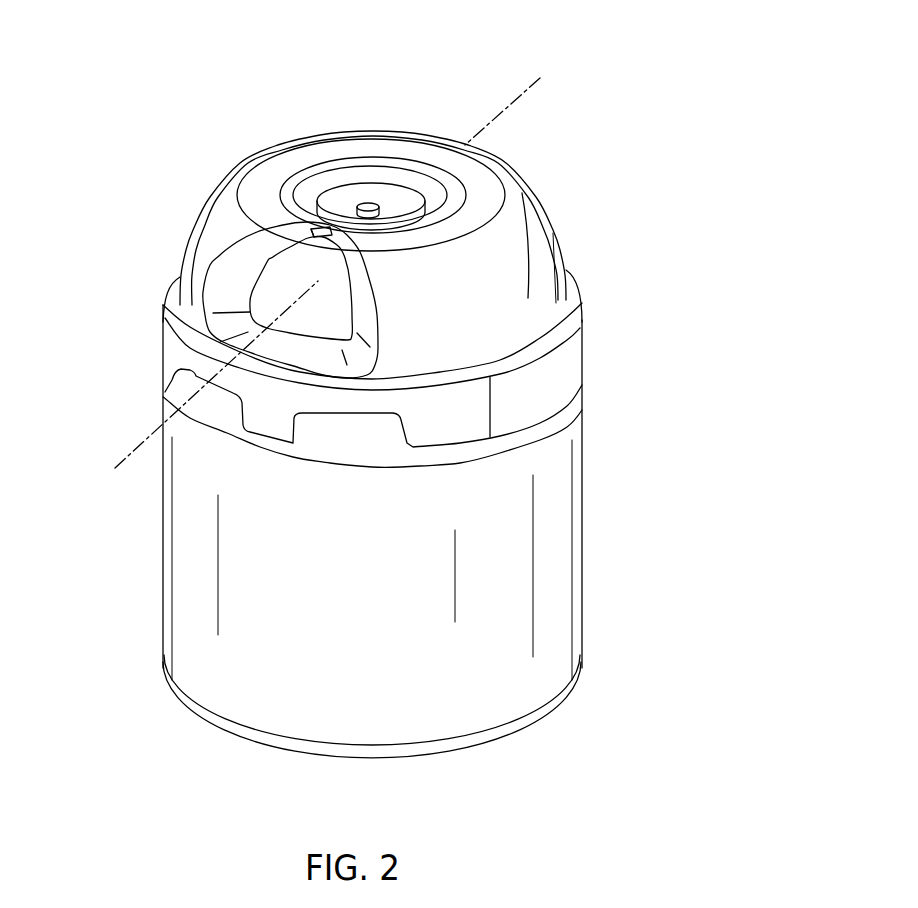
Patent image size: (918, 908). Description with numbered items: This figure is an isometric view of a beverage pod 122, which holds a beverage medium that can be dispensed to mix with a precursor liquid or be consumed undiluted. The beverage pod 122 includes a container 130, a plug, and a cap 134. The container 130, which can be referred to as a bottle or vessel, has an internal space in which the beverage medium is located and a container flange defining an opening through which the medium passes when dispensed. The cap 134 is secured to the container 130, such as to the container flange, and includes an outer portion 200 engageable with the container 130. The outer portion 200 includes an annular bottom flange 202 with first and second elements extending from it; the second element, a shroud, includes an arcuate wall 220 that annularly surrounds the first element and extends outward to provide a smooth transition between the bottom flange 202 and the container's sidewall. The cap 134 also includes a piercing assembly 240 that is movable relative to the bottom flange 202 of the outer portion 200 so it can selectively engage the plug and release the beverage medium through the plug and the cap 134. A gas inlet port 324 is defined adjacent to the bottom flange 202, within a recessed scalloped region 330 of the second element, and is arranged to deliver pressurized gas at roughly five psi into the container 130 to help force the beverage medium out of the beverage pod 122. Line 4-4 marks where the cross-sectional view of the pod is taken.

The beverage pod 122 is at (596, 138).
The container 130 is at (555, 572).
The cap 134 is at (537, 247).
The outer portion 200 is at (523, 322).
The annular bottom flange 202 is at (267, 175).
The arcuate wall 220 is at (218, 208).
The piercing assembly 240 is at (430, 124).
The gas inlet port 324 is at (303, 244).
The recessed scalloped region 330 is at (307, 323).
The line 4- 4 is at (540, 78).